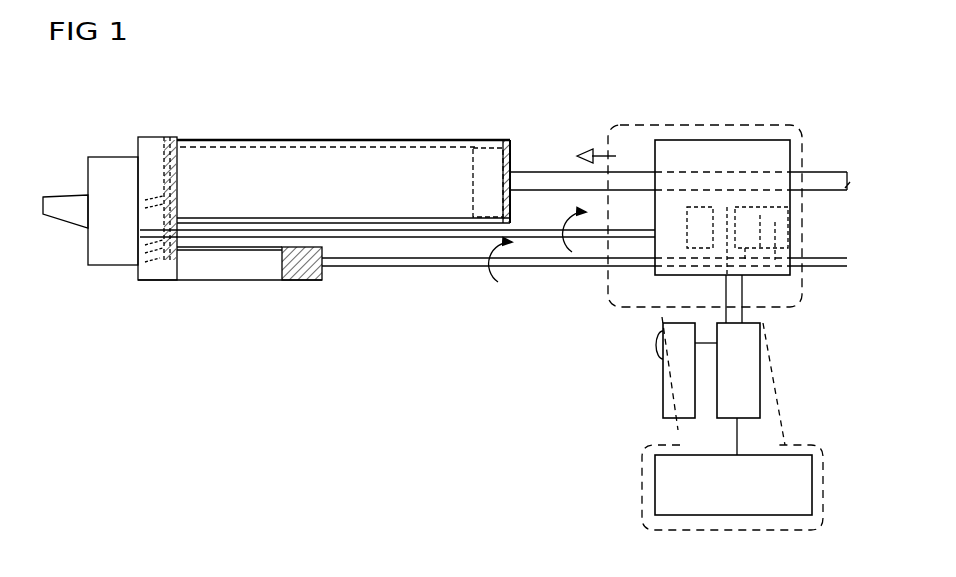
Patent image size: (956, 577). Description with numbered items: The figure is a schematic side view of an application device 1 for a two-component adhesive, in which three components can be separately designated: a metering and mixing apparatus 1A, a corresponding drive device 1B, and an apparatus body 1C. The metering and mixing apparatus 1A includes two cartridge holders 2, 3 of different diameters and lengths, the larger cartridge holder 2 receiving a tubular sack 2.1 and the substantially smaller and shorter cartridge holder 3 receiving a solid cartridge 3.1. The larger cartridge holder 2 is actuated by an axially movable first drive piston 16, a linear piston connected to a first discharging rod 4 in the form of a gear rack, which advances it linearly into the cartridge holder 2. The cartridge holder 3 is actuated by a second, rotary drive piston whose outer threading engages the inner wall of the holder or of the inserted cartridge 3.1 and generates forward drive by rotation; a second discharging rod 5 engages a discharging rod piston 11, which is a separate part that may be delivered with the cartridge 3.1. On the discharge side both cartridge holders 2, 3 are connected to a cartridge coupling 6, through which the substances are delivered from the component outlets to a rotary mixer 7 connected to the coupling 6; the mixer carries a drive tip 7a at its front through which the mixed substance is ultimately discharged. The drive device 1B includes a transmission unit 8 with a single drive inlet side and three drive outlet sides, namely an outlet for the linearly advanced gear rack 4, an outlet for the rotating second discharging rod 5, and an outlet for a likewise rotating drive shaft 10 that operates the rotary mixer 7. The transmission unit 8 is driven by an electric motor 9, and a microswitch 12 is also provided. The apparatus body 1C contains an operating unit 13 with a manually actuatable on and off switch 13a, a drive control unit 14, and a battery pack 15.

The application device 1 is at (656, 62).
The metering and mixing apparatus 1A is at (293, 366).
The drive device 1B is at (562, 326).
The apparatus body 1C is at (634, 424).
The cartridge holder 2 is at (338, 140).
The tubular sack 2.1 is at (270, 140).
The cartridge holder 3 is at (245, 280).
The solid cartridge 3.1 is at (210, 280).
The first discharging rod 4 is at (552, 172).
The second discharging rod 5 is at (432, 263).
The cartridge coupling 6 is at (151, 137).
The rotary mixer 7 is at (111, 162).
The drive tip 7a is at (70, 203).
The transmission unit 8 is at (740, 97).
The electric motor 9 is at (786, 302).
The drive shaft 10 is at (356, 226).
The discharging rod piston 11 is at (300, 280).
The microswitch 12 is at (704, 262).
The operating unit 13 is at (672, 380).
The on and off switch 13a is at (650, 345).
The drive control unit 14 is at (752, 378).
The battery pack 15 is at (665, 485).
The first drive piston 16 is at (500, 140).